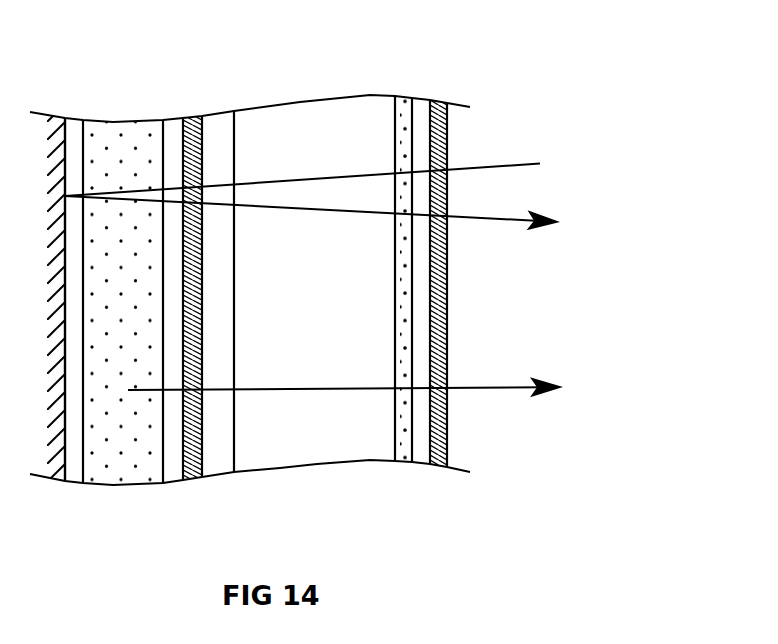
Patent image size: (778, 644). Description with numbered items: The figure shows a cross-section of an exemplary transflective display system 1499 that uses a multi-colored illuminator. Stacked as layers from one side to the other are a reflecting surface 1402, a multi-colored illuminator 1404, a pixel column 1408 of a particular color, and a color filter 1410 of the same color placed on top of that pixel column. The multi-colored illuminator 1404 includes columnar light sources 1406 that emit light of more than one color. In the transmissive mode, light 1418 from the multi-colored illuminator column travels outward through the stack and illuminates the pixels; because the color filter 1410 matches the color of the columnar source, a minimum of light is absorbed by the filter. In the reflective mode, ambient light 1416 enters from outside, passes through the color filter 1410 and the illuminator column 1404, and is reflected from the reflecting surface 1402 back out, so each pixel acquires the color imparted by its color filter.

The transflective display system 1499 is at (680, 38).
The reflecting surface 1402 is at (62, 462).
The multi-colored illuminator 1404 is at (124, 462).
The columnar light sources 1406 is at (193, 462).
The pixel column 1408 is at (317, 453).
The color filter 1410 is at (405, 455).
The ambient light 1416 is at (332, 194).
The light 1418 is at (370, 386).